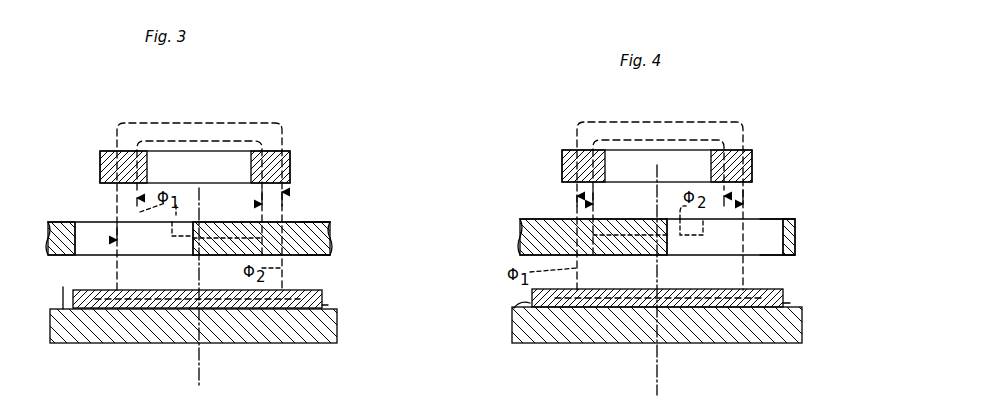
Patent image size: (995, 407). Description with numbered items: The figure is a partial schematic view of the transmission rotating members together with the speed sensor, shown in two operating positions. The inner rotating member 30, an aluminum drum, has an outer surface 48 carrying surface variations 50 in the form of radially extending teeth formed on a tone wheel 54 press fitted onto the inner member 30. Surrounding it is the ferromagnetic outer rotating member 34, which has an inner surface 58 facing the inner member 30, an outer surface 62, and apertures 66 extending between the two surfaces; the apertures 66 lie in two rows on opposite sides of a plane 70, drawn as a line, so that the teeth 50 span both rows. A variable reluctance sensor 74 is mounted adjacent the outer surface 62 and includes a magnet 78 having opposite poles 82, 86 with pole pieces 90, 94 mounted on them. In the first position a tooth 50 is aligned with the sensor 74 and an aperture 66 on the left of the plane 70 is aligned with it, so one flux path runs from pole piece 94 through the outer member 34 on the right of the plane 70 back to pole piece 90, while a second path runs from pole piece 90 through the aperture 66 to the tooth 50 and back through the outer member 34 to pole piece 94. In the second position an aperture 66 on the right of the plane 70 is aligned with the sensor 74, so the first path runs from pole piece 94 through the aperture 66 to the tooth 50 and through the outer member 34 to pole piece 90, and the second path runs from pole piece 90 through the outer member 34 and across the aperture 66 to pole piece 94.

In FIG. 3, the inner rotating member 30 is at (327, 330).
In FIG. 4, the inner rotating member 30 is at (793, 330).
In FIG. 3, the outer rotating member 34 is at (209, 236).
In FIG. 4, the outer rotating member 34 is at (678, 223).
In FIG. 3, the outer surface of inner member 48 is at (53, 291).
In FIG. 4, the outer surface of inner member 48 is at (514, 308).
In FIG. 3, the surface variations 50 is at (322, 292).
In FIG. 4, the surface variations 50 is at (783, 290).
In FIG. 3, the tone wheel 54 is at (328, 305).
In FIG. 4, the tone wheel 54 is at (790, 303).
In FIG. 3, the inner surface of outer member 58 is at (326, 255).
In FIG. 4, the inner surface of outer member 58 is at (793, 256).
In FIG. 3, the outer surface of outer member 62 is at (318, 222).
In FIG. 4, the outer surface of outer member 62 is at (783, 220).
In FIG. 3, the aperture 66 is at (73, 240).
In FIG. 4, the aperture 66 is at (783, 243).
In FIG. 3, the plane 70 is at (203, 375).
In FIG. 4, the plane 70 is at (662, 375).
In FIG. 3, the sensor 74 is at (296, 147).
In FIG. 4, the sensor 74 is at (758, 147).
In FIG. 3, the magnet 78 is at (191, 137).
In FIG. 4, the magnet 78 is at (651, 136).
In FIG. 3, the pole of magnet 82 is at (158, 160).
In FIG. 4, the pole of magnet 82 is at (612, 160).
In FIG. 3, the pole of magnet 86 is at (235, 160).
In FIG. 4, the pole of magnet 86 is at (690, 158).
In FIG. 3, the pole piece 90 is at (100, 163).
In FIG. 4, the pole piece 90 is at (562, 163).
In FIG. 3, the pole piece 94 is at (290, 165).
In FIG. 4, the pole piece 94 is at (752, 165).